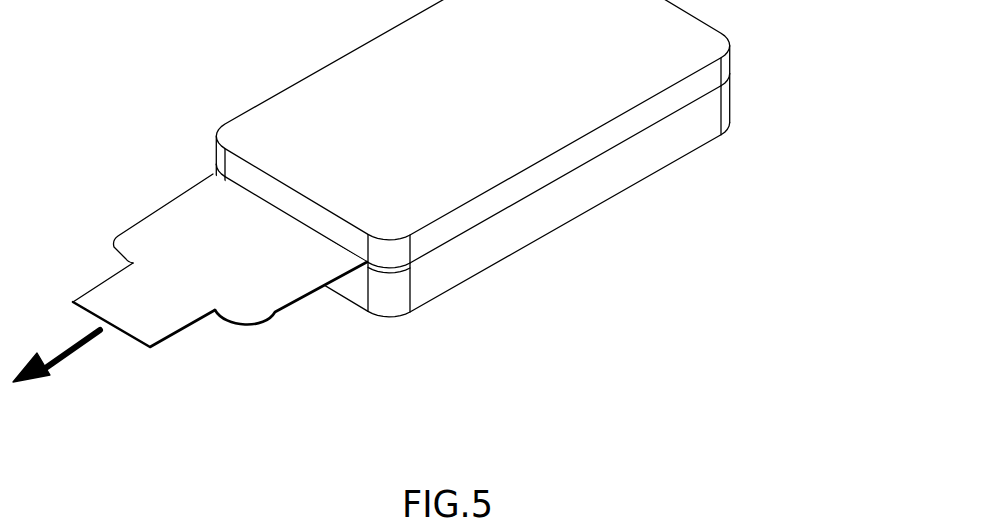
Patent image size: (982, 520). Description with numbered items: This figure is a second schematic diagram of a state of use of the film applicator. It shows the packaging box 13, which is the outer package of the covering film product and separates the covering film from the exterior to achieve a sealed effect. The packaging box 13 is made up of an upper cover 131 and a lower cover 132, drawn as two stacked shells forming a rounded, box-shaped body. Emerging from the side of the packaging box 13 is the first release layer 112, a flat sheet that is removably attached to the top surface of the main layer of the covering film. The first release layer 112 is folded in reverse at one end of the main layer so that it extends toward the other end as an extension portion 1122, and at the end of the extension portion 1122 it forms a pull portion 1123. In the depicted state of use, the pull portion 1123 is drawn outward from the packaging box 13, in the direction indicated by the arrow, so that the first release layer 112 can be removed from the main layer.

The packaging box 13 is at (552, 158).
The upper cover 131 is at (718, 62).
The lower cover 132 is at (718, 102).
The first release layer 112 is at (220, 316).
The extension portion 1122 is at (275, 302).
The pull portion 1123 is at (173, 324).